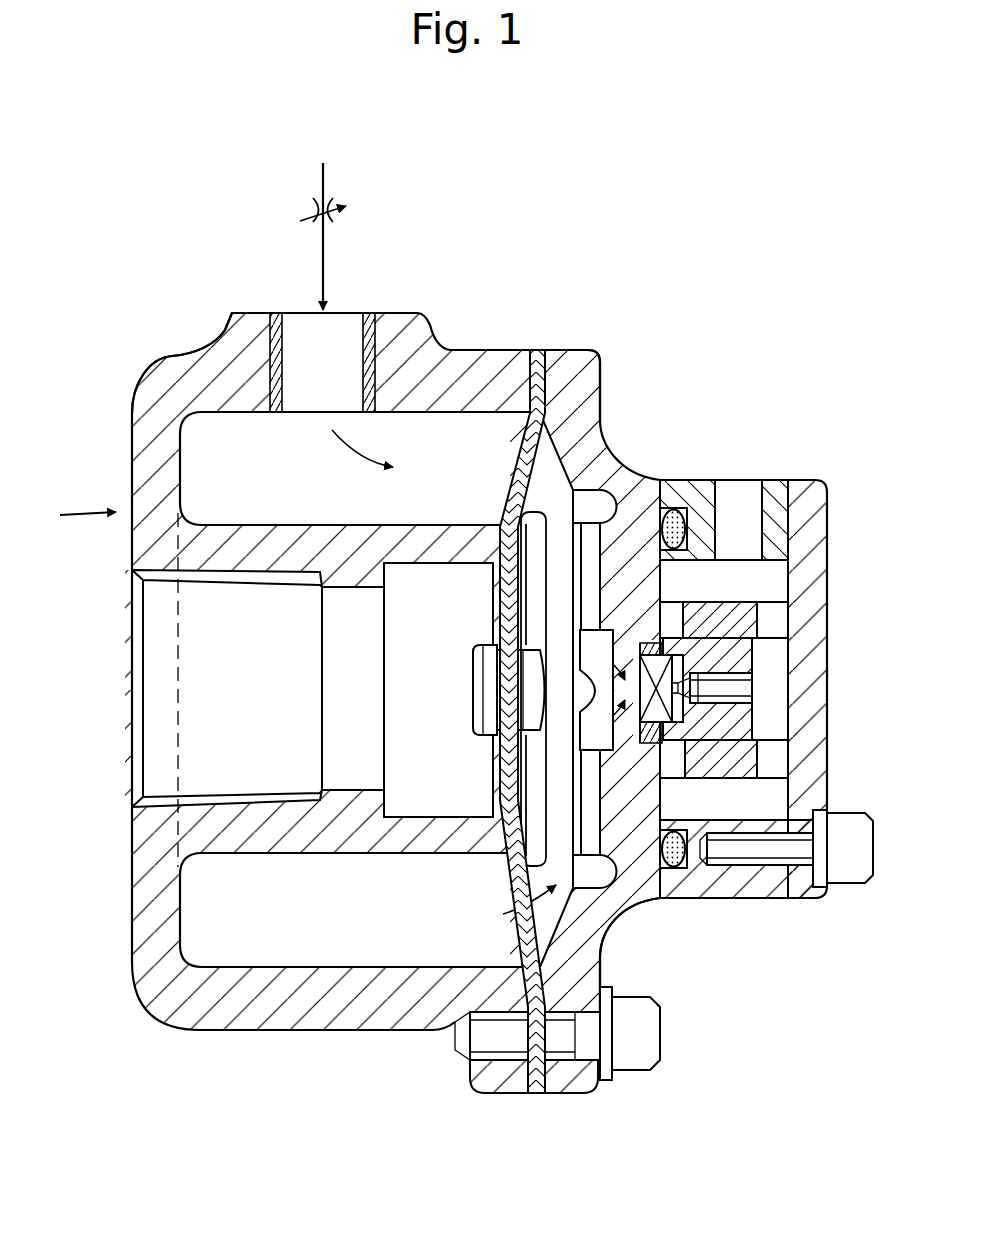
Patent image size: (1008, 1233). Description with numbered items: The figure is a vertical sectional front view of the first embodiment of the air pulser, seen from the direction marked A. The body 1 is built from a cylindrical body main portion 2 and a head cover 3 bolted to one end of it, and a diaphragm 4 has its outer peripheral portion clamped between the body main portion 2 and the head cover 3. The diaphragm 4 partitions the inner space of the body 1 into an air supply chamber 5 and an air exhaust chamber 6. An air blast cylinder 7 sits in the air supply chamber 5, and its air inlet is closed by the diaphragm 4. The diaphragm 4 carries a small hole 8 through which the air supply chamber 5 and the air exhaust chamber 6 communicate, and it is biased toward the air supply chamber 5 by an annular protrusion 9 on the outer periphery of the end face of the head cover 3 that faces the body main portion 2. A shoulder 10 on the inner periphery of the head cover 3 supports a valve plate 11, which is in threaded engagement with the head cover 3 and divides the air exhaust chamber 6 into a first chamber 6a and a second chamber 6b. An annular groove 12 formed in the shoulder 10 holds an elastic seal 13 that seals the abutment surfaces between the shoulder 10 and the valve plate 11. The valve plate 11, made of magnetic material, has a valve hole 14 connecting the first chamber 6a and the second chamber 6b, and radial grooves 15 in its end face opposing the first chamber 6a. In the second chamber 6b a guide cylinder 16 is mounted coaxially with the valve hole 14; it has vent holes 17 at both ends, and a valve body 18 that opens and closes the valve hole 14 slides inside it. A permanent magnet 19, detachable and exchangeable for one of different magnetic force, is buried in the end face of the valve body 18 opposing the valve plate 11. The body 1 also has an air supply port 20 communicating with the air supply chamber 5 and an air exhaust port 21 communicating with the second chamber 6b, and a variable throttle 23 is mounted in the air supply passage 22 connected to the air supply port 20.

The body 1 is at (150, 363).
The body main portion 2 is at (140, 412).
The head cover 3 is at (595, 365).
The diaphragm 4 is at (515, 453).
The air supply chamber 5 is at (200, 455).
The air exhaust chamber 6 is at (547, 470).
The first chamber 6a is at (630, 907).
The second chamber 6b is at (765, 580).
The air blast cylinder 7 is at (450, 537).
The small hole 8 is at (520, 910).
The annular protrusion 9 is at (535, 959).
The shoulder 10 is at (665, 500).
The valve plate 11 is at (655, 795).
The annular groove 12 is at (690, 873).
The elastic seal 13 is at (687, 867).
The valve hole 14 is at (630, 697).
The radial grooves 15 is at (590, 597).
The guide cylinder 16 is at (725, 610).
The vent holes 17 is at (775, 620).
The valve body 18 is at (740, 720).
The permanent magnet 19 is at (665, 680).
The air supply port 20 is at (345, 333).
The air exhaust port 21 is at (745, 490).
The air supply passage 22 is at (320, 180).
The variable throttle 23 is at (312, 208).
The direction A is at (73, 520).